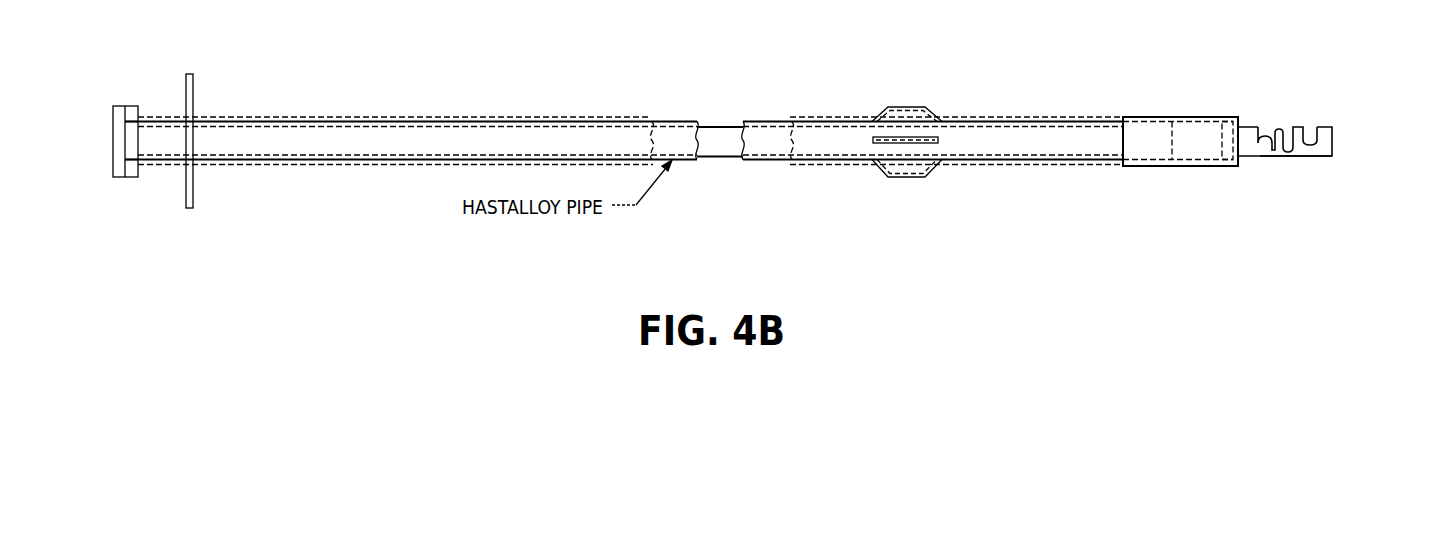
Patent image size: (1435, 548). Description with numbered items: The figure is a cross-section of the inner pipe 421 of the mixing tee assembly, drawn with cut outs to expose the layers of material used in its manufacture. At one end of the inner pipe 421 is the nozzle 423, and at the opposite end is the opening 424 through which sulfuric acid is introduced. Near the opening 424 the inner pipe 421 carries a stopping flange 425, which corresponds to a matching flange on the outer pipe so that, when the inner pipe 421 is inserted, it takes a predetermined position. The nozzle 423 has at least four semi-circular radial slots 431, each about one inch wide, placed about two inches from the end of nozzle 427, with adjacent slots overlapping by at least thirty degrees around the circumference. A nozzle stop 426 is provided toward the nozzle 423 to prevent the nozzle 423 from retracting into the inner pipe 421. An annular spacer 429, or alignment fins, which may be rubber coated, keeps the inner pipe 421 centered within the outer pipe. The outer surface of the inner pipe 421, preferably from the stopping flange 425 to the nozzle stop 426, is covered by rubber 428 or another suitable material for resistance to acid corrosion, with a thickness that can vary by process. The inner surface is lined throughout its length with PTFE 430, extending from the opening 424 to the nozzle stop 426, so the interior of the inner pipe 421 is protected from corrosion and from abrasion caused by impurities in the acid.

The inner pipe 421 is at (410, 162).
The nozzle 423 is at (1310, 153).
The opening 424 is at (113, 164).
The stopping flange 425 is at (193, 190).
The nozzle stop 426 is at (1227, 168).
The end of nozzle 427 is at (1333, 143).
The rubber 428 is at (378, 118).
The annular spacer 429 is at (898, 113).
The PTFE 430 is at (711, 123).
The semi-circular radial slots 431 is at (1313, 137).